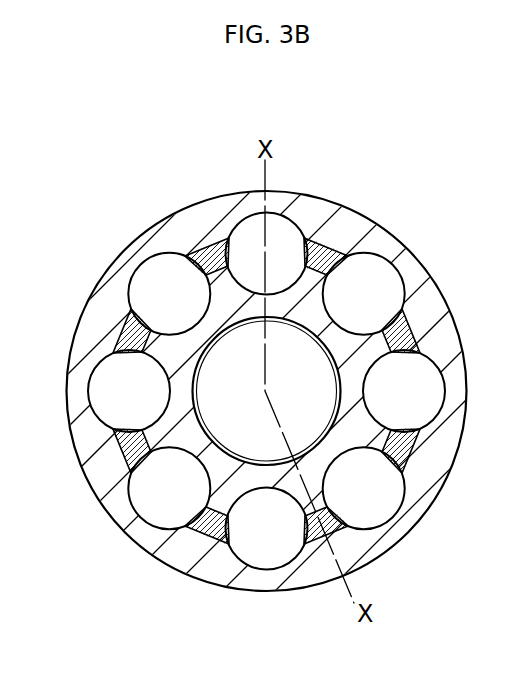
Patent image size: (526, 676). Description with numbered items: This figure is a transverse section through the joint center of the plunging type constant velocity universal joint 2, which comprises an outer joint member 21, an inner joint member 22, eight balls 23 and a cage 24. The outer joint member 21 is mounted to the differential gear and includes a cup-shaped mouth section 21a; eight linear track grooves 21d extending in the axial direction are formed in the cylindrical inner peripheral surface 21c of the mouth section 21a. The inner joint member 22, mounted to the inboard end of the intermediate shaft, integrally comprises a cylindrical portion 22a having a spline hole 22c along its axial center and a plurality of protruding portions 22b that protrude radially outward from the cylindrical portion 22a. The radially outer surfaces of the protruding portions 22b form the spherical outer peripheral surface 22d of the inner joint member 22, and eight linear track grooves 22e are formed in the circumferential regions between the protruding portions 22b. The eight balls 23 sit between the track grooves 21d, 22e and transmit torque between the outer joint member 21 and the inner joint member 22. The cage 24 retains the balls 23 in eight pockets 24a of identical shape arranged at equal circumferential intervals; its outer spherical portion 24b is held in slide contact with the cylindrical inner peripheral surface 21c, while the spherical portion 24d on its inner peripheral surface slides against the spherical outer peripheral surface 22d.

The plunging type constant velocity universal joint 2 is at (263, 338).
The outer joint member 21 is at (146, 231).
The mouth section 21a is at (120, 290).
The cylindrical inner peripheral surface 21c is at (313, 238).
The linear track grooves 21d is at (398, 276).
The inner joint member 22 is at (291, 428).
The cylindrical portion 22a is at (188, 443).
The protruding portions 22b is at (125, 448).
The spline hole 22c is at (225, 444).
The spherical outer peripheral surface 22d is at (390, 337).
The linear track grooves 22e is at (368, 382).
The balls 23 is at (260, 540).
The cage 24 is at (204, 244).
The pockets 24a is at (405, 450).
The spherical portion 24b is at (392, 490).
The spherical portion 24d is at (382, 441).